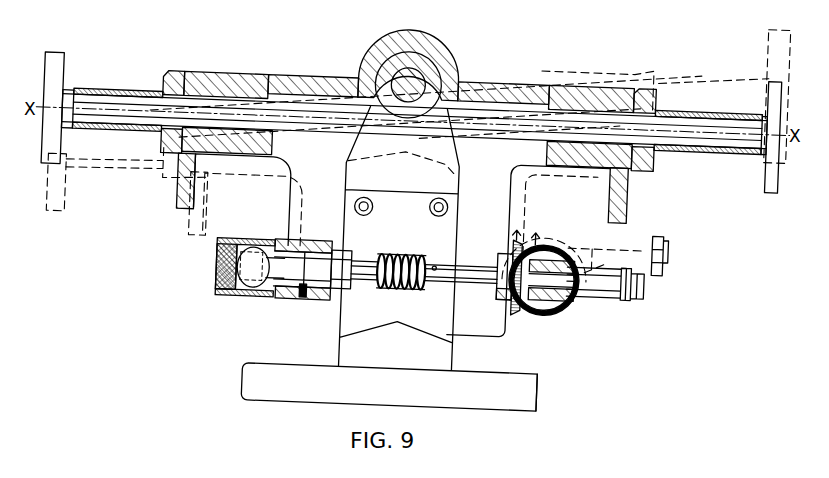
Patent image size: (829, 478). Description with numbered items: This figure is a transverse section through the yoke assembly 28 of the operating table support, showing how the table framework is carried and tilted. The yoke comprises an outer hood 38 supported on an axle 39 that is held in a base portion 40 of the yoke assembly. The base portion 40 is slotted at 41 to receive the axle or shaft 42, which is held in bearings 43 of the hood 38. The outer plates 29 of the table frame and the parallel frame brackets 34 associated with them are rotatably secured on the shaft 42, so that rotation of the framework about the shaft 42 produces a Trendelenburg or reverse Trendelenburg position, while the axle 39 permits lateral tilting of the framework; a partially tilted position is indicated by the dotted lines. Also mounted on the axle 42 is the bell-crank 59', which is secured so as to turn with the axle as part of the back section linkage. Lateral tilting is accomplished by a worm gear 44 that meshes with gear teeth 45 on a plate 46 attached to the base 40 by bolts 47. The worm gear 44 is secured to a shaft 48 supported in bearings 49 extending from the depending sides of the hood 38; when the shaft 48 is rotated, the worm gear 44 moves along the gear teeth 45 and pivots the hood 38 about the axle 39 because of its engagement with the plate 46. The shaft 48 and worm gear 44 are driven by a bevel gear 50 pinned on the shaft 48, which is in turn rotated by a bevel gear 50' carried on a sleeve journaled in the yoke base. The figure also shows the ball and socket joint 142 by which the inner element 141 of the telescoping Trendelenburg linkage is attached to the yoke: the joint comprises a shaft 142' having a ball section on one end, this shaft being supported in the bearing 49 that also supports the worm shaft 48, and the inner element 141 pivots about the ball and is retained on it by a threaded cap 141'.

The yoke assembly 28 is at (559, 390).
The outer plates 29 is at (56, 53).
The frame brackets 34 is at (173, 72).
The outer hood 38 is at (443, 58).
The axle 39 is at (423, 83).
The base portion 40 is at (254, 381).
The slot 41 is at (461, 178).
The axle 42 is at (313, 110).
The bearings 43 is at (230, 80).
The worm gear 44 is at (413, 293).
The gear teeth 45 is at (360, 250).
The plate 46 is at (459, 227).
The bolts 47 is at (432, 206).
The shaft 48 is at (467, 288).
The bearings 49 is at (285, 297).
The bevel gear 50 is at (523, 290).
The bevel gear 50' is at (577, 292).
The bell-crank 59' is at (417, 113).
The inner element 141 is at (250, 254).
The threaded cap 141' is at (208, 267).
The ball and socket joint 142 is at (272, 284).
The shaft 142' is at (295, 237).